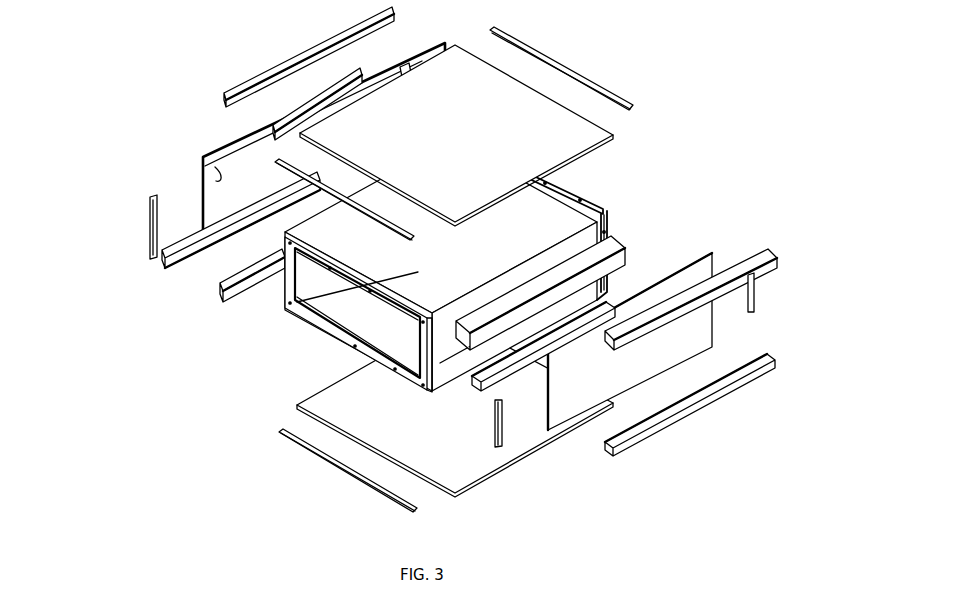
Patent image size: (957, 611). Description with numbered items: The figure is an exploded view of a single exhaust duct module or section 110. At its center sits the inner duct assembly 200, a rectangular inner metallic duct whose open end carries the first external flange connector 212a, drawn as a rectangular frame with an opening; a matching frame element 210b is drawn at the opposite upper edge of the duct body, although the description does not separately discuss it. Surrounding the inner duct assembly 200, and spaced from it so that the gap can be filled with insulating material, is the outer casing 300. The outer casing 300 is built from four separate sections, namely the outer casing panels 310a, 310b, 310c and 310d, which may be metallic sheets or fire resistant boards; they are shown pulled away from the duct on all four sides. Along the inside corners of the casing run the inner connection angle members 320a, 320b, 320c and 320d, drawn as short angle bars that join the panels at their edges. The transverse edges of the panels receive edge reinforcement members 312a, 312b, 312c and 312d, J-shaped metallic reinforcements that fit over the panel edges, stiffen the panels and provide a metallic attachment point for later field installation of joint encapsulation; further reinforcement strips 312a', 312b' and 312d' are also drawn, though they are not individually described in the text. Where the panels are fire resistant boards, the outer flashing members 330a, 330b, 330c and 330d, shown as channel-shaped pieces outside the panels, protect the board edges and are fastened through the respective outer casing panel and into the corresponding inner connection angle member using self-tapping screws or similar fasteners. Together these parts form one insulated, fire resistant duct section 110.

The exhaust duct section 110 is at (589, 34).
The inner duct assembly 200 is at (374, 333).
The frame 210b is at (620, 182).
The first external flange connector 212a is at (285, 310).
The outer casing 300 is at (611, 144).
The outer casing panel 310a is at (374, 150).
The outer casing panel 310b is at (562, 374).
The outer casing panel 310c is at (378, 440).
The outer casing panel 310d is at (203, 177).
The edge reinforcement member 312a is at (325, 206).
The strip 312a' is at (591, 68).
The edge reinforcement member 312b is at (500, 454).
The strip 312b' is at (788, 292).
The edge reinforcement member 312c is at (362, 485).
The edge reinforcement member 312d is at (121, 227).
The strip 312d' is at (433, 47).
The inner connection angle member 320a is at (330, 97).
The inner connection angle member 320b is at (625, 240).
The inner connection angle member 320c is at (483, 392).
The inner connection angle member 320d is at (222, 297).
The outer flashing member 330a is at (240, 91).
The outer flashing member 330b is at (760, 254).
The outer flashing member 330c is at (638, 336).
The outer flashing member 330d is at (165, 263).